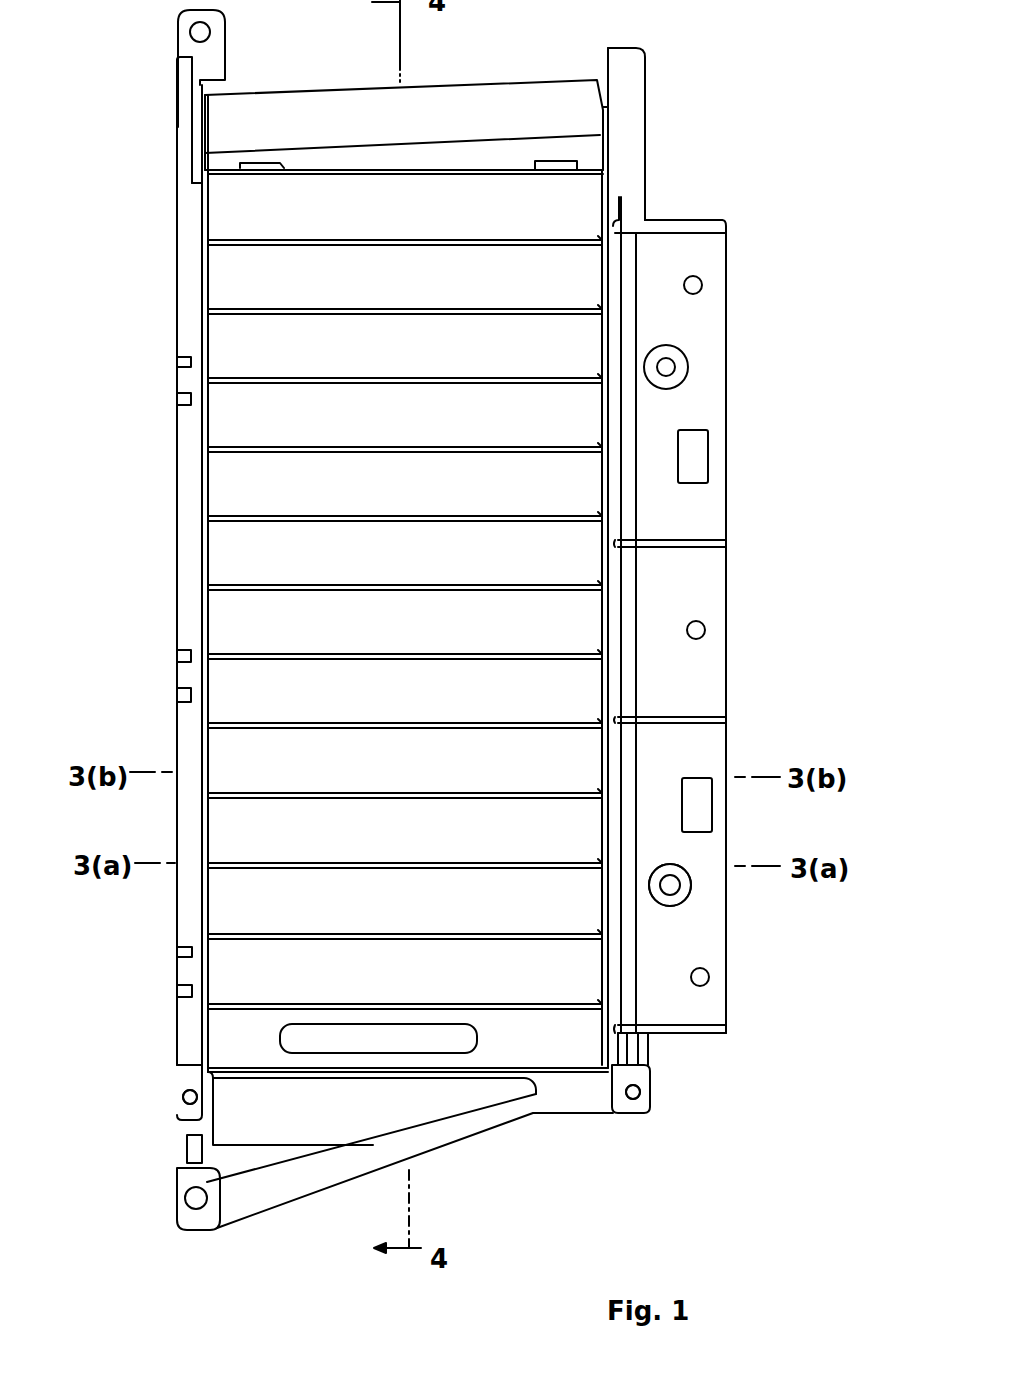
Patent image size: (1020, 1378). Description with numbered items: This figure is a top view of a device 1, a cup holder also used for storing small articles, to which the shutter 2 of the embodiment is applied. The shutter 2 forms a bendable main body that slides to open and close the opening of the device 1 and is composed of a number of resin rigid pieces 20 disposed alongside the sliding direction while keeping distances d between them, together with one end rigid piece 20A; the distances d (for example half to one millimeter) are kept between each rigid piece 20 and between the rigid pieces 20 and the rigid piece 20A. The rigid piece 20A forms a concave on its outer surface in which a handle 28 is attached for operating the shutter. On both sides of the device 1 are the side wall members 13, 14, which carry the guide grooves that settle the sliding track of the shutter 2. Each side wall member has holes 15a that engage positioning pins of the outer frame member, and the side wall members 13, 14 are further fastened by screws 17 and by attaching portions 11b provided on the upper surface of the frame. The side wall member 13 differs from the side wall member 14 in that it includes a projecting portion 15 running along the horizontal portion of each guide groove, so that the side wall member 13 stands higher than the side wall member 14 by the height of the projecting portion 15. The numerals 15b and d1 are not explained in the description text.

The device 1 is at (658, 84).
The shutter 2 is at (500, 84).
The side wall member 13 is at (673, 633).
The side wall member 14 is at (176, 447).
The projecting portion 15 is at (726, 335).
The hole 15a is at (411, 1094).
The grommet seat 15b is at (682, 898).
The screw 17 is at (674, 368).
The rigid piece 20 is at (558, 212).
The rigid piece 20A is at (575, 1055).
The handle 28 is at (453, 1043).
The attaching portion 11b is at (184, 1096).
The distance d is at (238, 232).
The cell spacing d1 is at (298, 160).